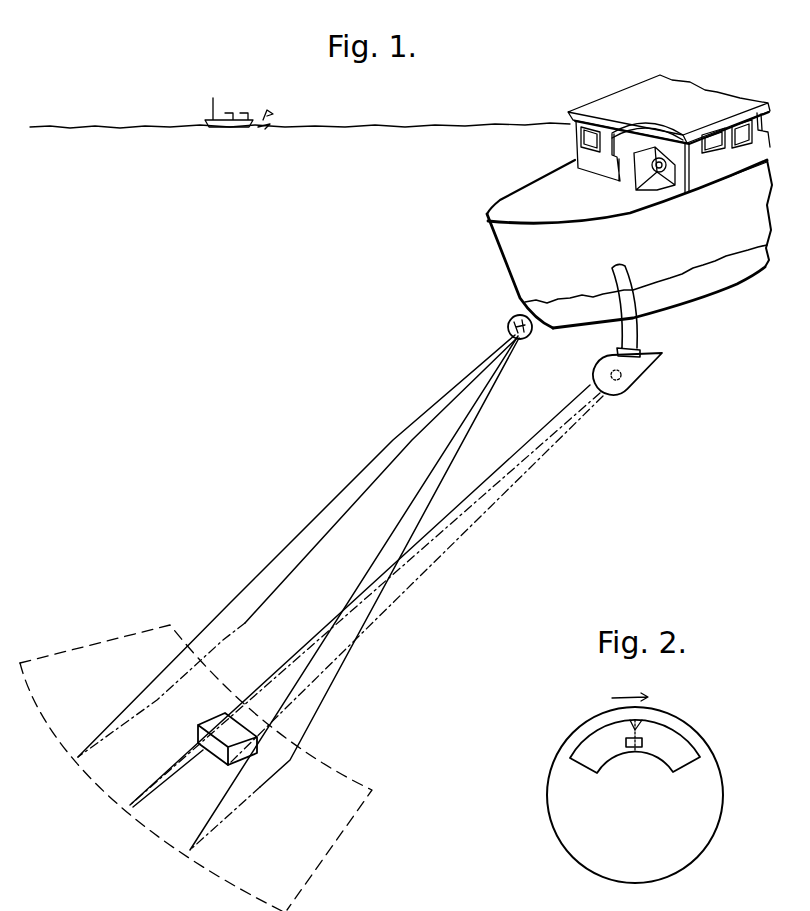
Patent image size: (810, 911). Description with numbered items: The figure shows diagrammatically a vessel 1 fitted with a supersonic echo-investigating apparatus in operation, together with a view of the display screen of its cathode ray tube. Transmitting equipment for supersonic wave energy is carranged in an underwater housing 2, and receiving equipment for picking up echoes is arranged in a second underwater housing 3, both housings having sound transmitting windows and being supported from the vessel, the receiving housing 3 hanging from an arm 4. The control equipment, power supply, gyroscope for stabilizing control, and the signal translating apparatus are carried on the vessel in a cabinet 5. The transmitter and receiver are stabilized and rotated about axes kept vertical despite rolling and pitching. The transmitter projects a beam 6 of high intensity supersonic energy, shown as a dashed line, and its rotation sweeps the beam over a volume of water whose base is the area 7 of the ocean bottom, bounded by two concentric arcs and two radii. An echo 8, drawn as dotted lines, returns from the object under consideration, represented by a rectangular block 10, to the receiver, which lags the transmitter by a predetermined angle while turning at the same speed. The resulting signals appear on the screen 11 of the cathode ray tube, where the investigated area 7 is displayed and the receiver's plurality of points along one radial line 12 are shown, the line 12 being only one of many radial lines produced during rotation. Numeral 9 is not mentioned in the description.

In FIG. 1, the vessel 1 is at (629, 244).
In FIG. 1, the underwater housing 2 is at (513, 315).
In FIG. 1, the underwater housing 3 is at (637, 380).
In FIG. 1, the arm 4 is at (640, 298).
In FIG. 1, the cabinet 5 is at (644, 148).
In FIG. 1, the beam 6 is at (366, 467).
In FIG. 1, the area 7 is at (340, 838).
In FIG. 2, the area 7 is at (685, 767).
In FIG. 1, the echo 8 is at (492, 489).
In FIG. 1, the beam axis 9 is at (214, 650).
In FIG. 1, the rectangular block 10 is at (218, 753).
In FIG. 2, the rectangular block 10 is at (642, 742).
In FIG. 1, the screen 11 is at (668, 160).
In FIG. 2, the screen 11 is at (707, 738).
In FIG. 2, the radial line 12 is at (640, 727).